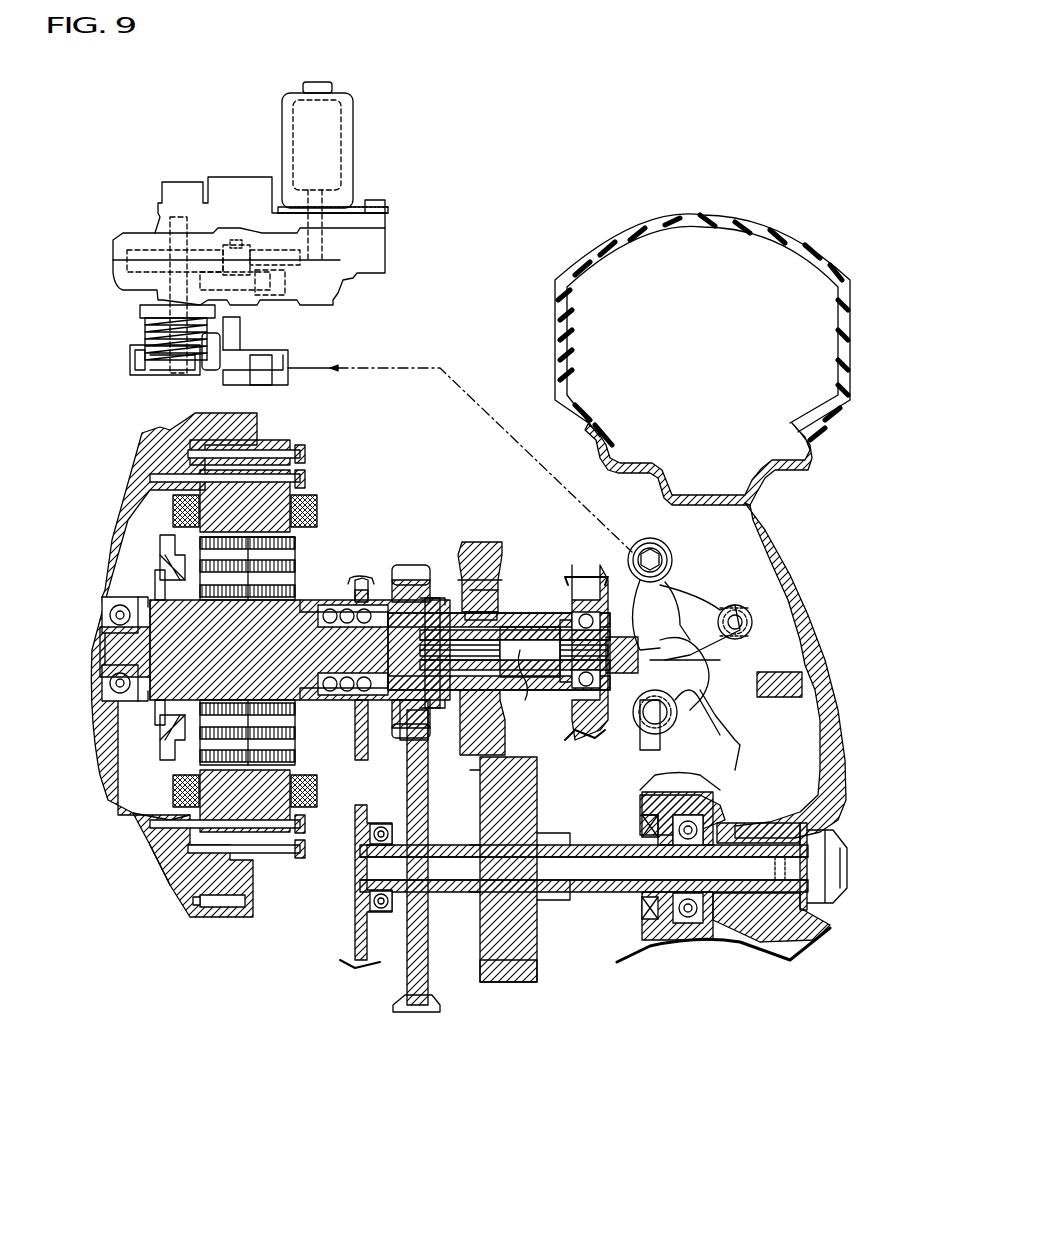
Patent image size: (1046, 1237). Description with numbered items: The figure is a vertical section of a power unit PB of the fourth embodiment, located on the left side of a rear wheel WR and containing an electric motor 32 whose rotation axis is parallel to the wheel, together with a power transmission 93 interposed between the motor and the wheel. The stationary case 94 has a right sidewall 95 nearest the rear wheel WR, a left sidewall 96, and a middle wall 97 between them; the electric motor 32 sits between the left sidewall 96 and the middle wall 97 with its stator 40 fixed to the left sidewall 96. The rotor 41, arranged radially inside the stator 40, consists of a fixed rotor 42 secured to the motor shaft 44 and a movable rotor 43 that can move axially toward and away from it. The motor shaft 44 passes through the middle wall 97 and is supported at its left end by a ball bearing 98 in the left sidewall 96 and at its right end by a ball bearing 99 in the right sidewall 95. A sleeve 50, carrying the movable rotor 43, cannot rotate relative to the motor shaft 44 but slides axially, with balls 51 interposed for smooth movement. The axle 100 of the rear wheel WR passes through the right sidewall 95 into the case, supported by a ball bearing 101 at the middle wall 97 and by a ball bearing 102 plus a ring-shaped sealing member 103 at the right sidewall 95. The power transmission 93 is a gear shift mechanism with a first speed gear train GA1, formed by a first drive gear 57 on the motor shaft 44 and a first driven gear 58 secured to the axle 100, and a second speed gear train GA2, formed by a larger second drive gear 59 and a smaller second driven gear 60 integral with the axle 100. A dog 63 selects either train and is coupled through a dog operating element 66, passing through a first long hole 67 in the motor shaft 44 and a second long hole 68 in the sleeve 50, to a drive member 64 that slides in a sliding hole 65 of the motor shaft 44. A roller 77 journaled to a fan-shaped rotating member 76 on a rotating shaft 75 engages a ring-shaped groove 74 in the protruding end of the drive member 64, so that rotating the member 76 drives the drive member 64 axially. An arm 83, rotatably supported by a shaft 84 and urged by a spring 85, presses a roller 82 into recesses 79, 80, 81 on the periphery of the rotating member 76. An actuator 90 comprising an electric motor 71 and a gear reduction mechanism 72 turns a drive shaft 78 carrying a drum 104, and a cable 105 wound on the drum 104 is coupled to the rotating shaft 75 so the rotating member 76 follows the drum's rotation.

The electric motor 32 is at (160, 790).
The stator 40 is at (240, 860).
The rotor 41 is at (300, 585).
The fixed rotor 42 is at (170, 563).
The movable rotor 43 is at (297, 530).
The motor shaft 44 is at (515, 640).
The sleeve 50 is at (530, 620).
The balls 51 is at (328, 695).
The first drive gear 57 is at (410, 572).
The first driven gear 58 is at (418, 1010).
The second drive gear 59 is at (477, 545).
The second driven gear 60 is at (515, 972).
The dog 63 is at (437, 620).
The drive member 64 is at (605, 660).
The sliding hole 65 is at (520, 655).
The dog operating element 66 is at (455, 700).
The first long hole 67 is at (450, 630).
The second long hole 68 is at (495, 753).
The electric motor 71 is at (355, 178).
The gear reduction mechanism 72 is at (303, 278).
The ring-shaped groove 74 is at (665, 590).
The rotating shaft 75 is at (650, 560).
The rotating member 76 is at (690, 603).
The roller 77 is at (705, 705).
The drive shaft 78 is at (140, 290).
The recess 79 is at (740, 630).
The recess 80 is at (720, 660).
The recess 81 is at (700, 660).
The roller 82 is at (752, 624).
The arm 83 is at (775, 682).
The shaft 84 is at (660, 700).
The spring 85 is at (695, 700).
The lock actuator 90 is at (355, 137).
The power transmission 93 is at (402, 1025).
The case 94 is at (180, 897).
The right sidewall 95 is at (660, 795).
The left sidewall 96 is at (155, 868).
The middle wall 97 is at (358, 580).
The ball bearing 98 is at (127, 703).
The ball bearing 99 is at (585, 622).
The axle 100 is at (617, 885).
The ball bearing 101 is at (350, 906).
The ball bearing 102 is at (685, 915).
The ring-shaped sealing member 103 is at (652, 917).
The drum 104 is at (275, 352).
The cable 105 is at (480, 400).
The power unit PB is at (272, 914).
The first speed gear train GA1 is at (393, 996).
The second speed gear train GA2 is at (535, 984).
The rear wheel WR is at (675, 228).